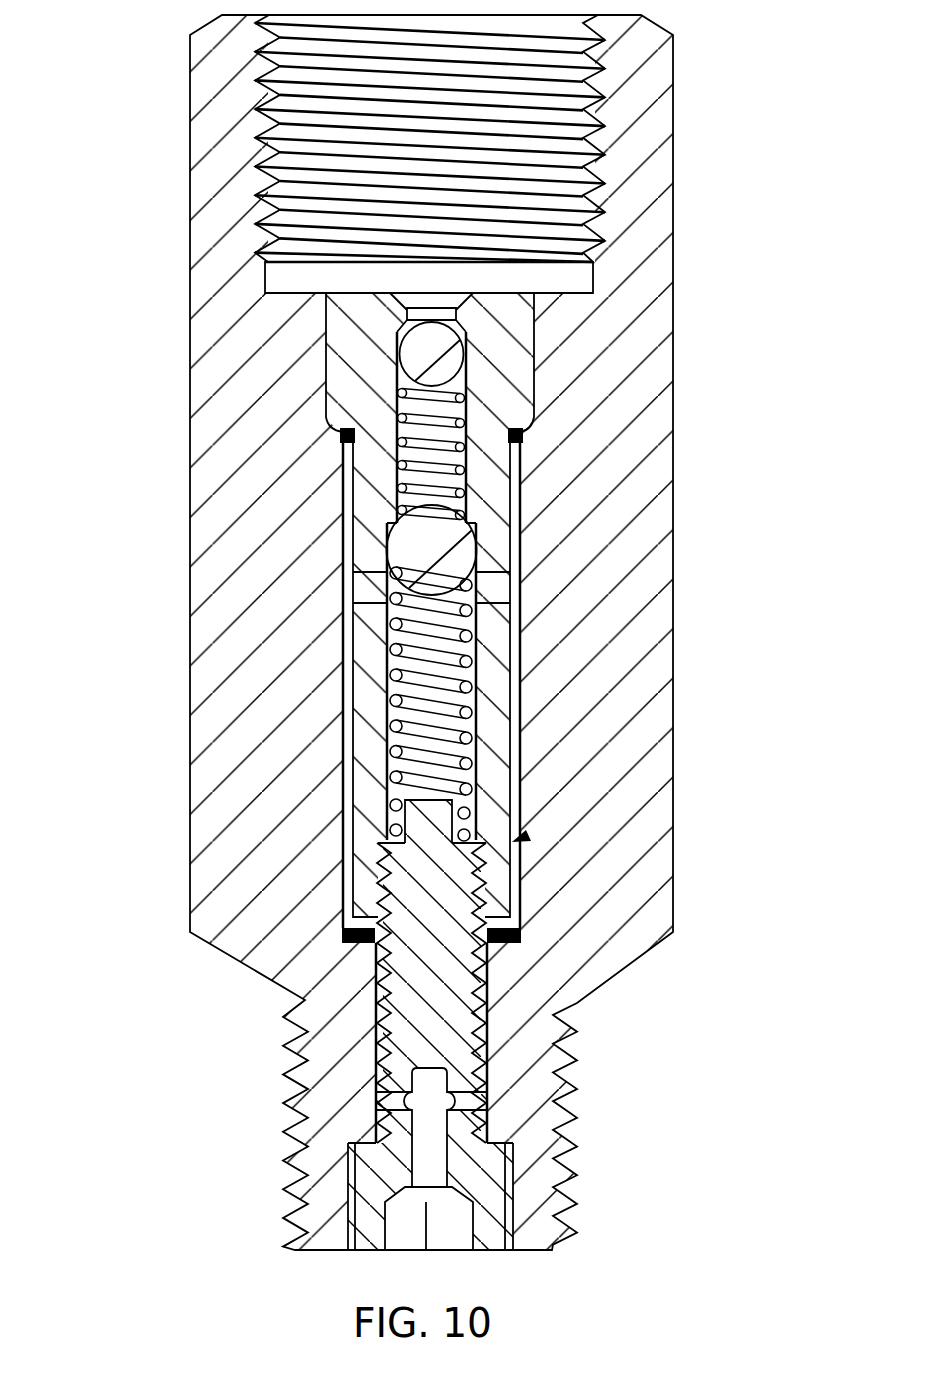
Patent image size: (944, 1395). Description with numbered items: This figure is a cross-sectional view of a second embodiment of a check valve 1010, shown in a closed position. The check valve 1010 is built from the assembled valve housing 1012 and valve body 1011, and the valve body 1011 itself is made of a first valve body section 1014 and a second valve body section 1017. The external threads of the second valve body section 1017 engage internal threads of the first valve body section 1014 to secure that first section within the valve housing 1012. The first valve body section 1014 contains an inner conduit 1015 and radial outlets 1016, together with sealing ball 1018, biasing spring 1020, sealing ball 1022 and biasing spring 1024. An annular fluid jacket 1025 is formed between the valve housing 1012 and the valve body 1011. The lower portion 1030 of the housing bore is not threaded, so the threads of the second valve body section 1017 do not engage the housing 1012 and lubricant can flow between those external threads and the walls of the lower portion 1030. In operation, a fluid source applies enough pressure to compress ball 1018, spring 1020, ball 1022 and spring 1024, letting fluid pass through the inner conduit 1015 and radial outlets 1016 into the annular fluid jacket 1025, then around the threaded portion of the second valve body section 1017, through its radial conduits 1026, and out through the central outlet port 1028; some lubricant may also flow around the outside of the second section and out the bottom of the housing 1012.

The check valve 1010 is at (712, 193).
The valve body 1011 is at (515, 840).
The valve housing 1012 is at (190, 150).
The first valve body section 1014 is at (515, 363).
The inner conduit 1015 is at (468, 468).
The radial outlets 1016 is at (488, 587).
The second valve body section 1017 is at (461, 1067).
The sealing ball 1018 is at (423, 350).
The biasing spring 1020 is at (405, 400).
The sealing ball 1022 is at (412, 547).
The biasing spring 1024 is at (392, 656).
The annular fluid jacket 1025 is at (510, 660).
The radial conduits 1026 is at (403, 1102).
The central outlet port 1028 is at (428, 1167).
The lower portion of the housing bore 1030 is at (483, 1015).